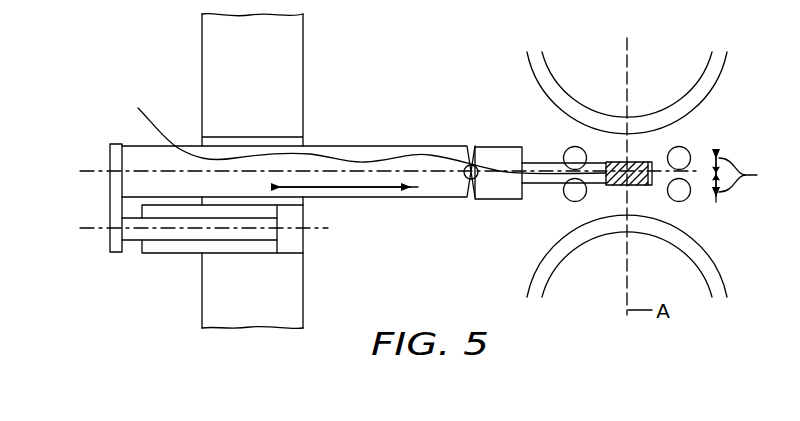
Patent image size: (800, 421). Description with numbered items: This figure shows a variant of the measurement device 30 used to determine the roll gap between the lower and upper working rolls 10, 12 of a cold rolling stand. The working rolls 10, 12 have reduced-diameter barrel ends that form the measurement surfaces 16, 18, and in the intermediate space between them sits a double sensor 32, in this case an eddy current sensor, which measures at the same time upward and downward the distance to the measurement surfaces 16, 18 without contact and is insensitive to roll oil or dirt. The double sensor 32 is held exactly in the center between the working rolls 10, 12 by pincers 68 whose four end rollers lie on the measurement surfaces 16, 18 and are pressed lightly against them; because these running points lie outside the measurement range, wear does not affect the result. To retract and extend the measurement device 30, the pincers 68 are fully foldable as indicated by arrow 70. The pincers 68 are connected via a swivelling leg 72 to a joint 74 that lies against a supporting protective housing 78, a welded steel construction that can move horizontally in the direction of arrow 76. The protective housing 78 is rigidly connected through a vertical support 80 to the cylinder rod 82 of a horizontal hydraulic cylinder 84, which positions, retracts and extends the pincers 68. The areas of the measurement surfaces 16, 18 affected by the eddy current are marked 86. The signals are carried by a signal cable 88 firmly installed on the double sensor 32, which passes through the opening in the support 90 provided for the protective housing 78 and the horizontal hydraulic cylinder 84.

The lower working roll 10 is at (552, 262).
The upper working roll 12 is at (700, 90).
The lower measurement surface 16 is at (540, 283).
The upper measurement surface 18 is at (705, 125).
The measurement device 30 is at (592, 167).
The double sensor 32 is at (634, 198).
The pincers 68 is at (562, 157).
The arrow 70 is at (749, 176).
The swivelling leg 72 is at (567, 185).
The joint 74 is at (468, 178).
The arrow 76 is at (385, 188).
The protective housing 78 is at (130, 157).
The vertical support 80 is at (112, 206).
The cylinder rod 82 is at (197, 232).
The horizontal hydraulic cylinder 84 is at (215, 258).
The measurement areas 86 is at (622, 186).
The signal cable 88 is at (138, 110).
The support 90 is at (204, 98).